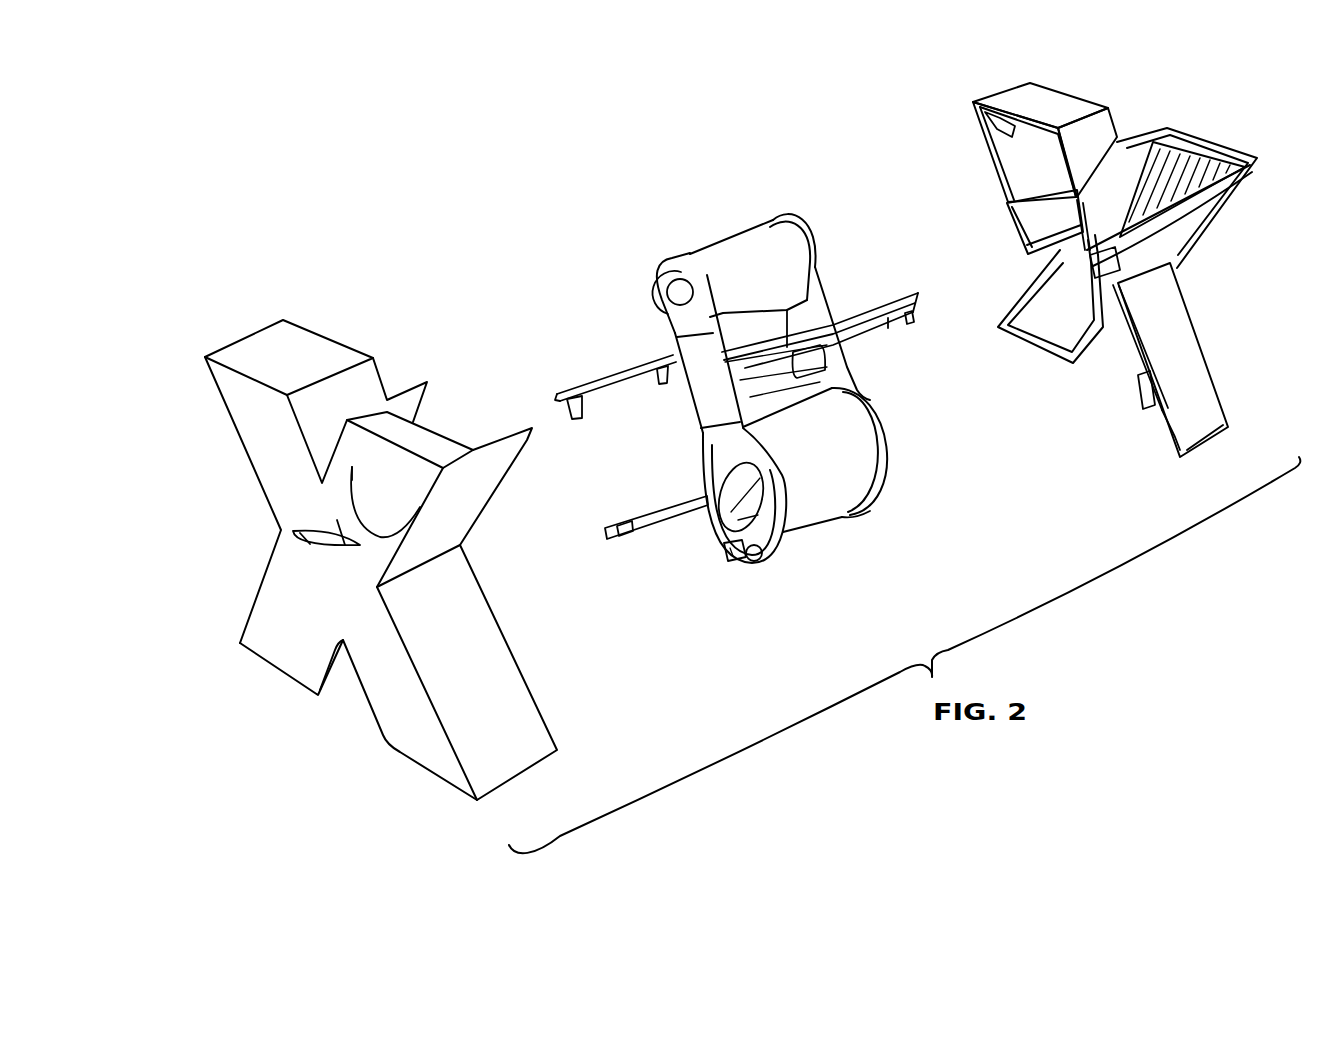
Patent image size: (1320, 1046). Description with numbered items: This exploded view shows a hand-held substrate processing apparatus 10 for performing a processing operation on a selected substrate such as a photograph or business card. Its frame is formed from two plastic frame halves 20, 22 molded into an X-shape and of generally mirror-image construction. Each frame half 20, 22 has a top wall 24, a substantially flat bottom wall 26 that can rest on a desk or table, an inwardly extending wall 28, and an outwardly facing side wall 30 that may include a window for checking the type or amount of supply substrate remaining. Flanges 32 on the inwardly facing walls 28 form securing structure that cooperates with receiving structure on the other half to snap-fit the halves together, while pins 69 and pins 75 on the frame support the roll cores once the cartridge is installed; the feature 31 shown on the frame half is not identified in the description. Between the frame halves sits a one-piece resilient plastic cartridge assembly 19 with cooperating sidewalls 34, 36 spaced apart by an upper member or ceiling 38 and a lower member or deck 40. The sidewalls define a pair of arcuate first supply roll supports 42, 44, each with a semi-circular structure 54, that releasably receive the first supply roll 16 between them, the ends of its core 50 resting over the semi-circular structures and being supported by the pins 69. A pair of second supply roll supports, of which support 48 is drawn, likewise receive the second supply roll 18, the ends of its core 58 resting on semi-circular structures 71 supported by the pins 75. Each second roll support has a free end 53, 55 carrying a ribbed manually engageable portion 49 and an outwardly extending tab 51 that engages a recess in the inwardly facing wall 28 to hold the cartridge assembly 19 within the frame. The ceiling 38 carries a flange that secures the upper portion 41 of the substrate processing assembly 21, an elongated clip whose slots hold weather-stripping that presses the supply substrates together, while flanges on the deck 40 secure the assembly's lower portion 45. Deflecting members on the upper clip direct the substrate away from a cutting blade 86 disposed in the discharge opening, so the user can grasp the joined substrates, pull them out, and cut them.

The substrate processing apparatus 10 is at (250, 192).
The first supply roll 16 is at (731, 230).
The second supply roll 18 is at (820, 533).
The cartridge assembly 19 is at (794, 207).
The frame half 20 is at (530, 779).
The substrate processing assembly 21 is at (568, 514).
The frame half 22 is at (1200, 459).
The top wall 24 is at (335, 355).
The bottom wall 26 is at (423, 770).
The inwardly extending wall 28 is at (1100, 335).
The outwardly facing side wall 30 is at (282, 655).
The bore 31 is at (330, 522).
The flange 32 is at (1012, 136).
The sidewall 34 is at (702, 392).
The sidewall 36 is at (807, 307).
The ceiling 38 is at (828, 308).
The deck 40 is at (832, 378).
The upper portion 41 is at (590, 383).
The first supply roll support 42 is at (660, 258).
The first supply roll support 44 is at (800, 223).
The lower portion 45 is at (640, 537).
The second supply roll support 48 is at (902, 457).
The manually engageable portion 49 is at (737, 562).
The core 50 is at (663, 290).
The outwardly extending tab 51 is at (753, 562).
The free end 53 is at (725, 555).
The semi-circular structure 54 is at (677, 302).
The free end 55 is at (847, 517).
The core 58 is at (708, 482).
The pin 69 is at (990, 123).
The semi-circular structure 71 is at (717, 503).
The pin 75 is at (1153, 452).
The cutting blade 86 is at (903, 287).